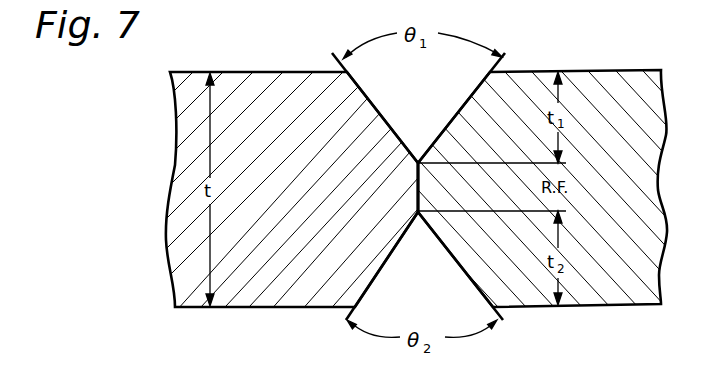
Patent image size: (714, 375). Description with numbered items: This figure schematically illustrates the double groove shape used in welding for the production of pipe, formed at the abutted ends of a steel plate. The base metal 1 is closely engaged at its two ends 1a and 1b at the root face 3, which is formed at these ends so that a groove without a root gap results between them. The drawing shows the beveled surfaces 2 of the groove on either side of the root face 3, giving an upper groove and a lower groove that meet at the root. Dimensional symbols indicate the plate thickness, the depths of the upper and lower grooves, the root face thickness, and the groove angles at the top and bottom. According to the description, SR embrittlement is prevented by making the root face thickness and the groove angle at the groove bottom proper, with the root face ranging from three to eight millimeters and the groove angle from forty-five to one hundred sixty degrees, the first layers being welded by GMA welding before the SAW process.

The base metal 1 is at (357, 163).
The end of the base metal 1a is at (288, 78).
The end of the base metal 1b is at (597, 78).
The bevel (groove) face 2 is at (374, 105).
The root face 3 is at (418, 190).